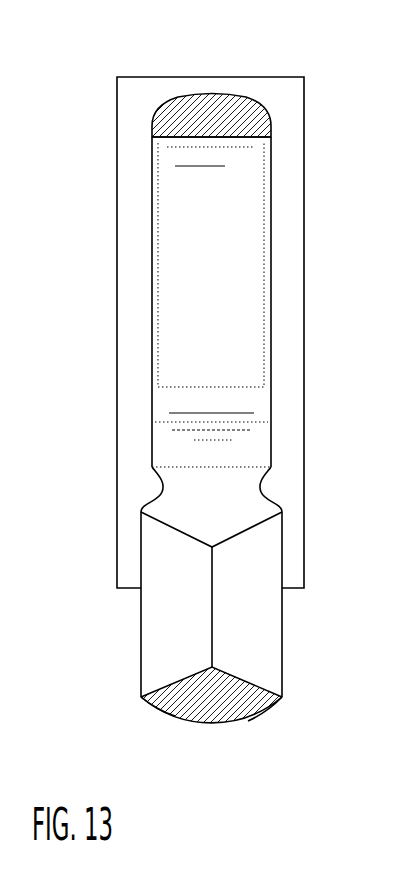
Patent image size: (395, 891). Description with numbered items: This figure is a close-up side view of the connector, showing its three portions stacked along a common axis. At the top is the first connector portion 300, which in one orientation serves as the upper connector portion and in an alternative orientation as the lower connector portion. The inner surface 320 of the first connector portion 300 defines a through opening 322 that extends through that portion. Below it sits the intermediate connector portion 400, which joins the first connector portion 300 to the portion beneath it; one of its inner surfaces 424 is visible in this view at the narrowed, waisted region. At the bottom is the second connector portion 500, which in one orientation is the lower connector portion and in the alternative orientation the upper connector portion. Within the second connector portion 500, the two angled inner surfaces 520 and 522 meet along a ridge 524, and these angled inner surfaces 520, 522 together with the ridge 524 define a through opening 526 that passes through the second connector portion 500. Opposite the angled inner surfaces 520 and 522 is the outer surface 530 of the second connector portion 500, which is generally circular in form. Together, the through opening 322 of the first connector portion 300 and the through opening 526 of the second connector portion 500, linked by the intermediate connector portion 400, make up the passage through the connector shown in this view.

The first connector portion 300 is at (227, 117).
The inner surface 320 is at (233, 138).
The through opening 322 is at (170, 300).
The intermediate connector portion 400 is at (162, 491).
The inner surface 424 is at (225, 502).
The through opening 526 is at (156, 611).
The ridge 524 is at (212, 599).
The angled inner surface 522 is at (244, 680).
The angled inner surface 520 is at (172, 688).
The second connector portion 500 is at (204, 695).
The outer surface 530 is at (250, 726).